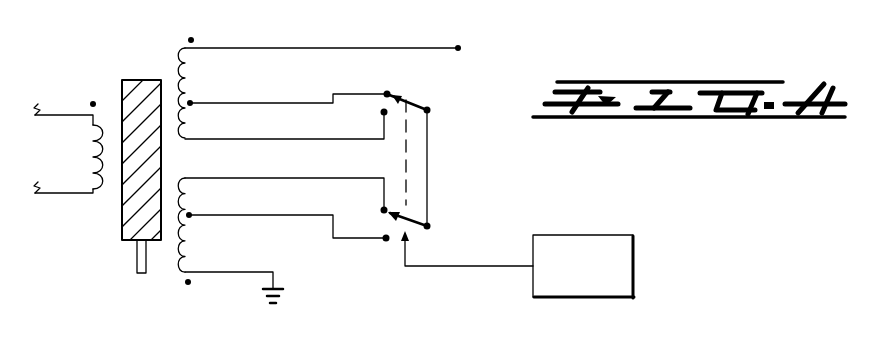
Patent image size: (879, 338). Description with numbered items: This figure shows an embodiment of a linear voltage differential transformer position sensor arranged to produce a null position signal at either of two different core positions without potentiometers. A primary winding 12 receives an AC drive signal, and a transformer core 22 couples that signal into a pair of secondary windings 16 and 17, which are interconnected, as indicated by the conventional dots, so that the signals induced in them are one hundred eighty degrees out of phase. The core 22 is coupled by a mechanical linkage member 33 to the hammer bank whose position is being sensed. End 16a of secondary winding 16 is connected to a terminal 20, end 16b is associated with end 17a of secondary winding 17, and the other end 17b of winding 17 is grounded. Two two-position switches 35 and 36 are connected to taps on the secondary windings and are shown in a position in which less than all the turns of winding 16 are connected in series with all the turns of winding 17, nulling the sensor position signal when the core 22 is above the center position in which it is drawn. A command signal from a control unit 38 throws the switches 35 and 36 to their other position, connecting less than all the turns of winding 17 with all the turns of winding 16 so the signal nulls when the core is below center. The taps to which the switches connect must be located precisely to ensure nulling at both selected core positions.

The primary winding 12 is at (92, 153).
The transformer core 22 is at (143, 79).
The mechanical linkage member 33 is at (136, 263).
The secondary winding 16 is at (185, 68).
The end of secondary winding 16 16a is at (198, 45).
The end of secondary winding 16 16b is at (190, 137).
The secondary winding 17 is at (185, 240).
The end of secondary winding 17 17a is at (187, 178).
The end of secondary winding 17 17b is at (182, 275).
The terminal 20 is at (462, 48).
The switch 35 is at (413, 102).
The switch 36 is at (418, 228).
The control unit 38 is at (574, 234).